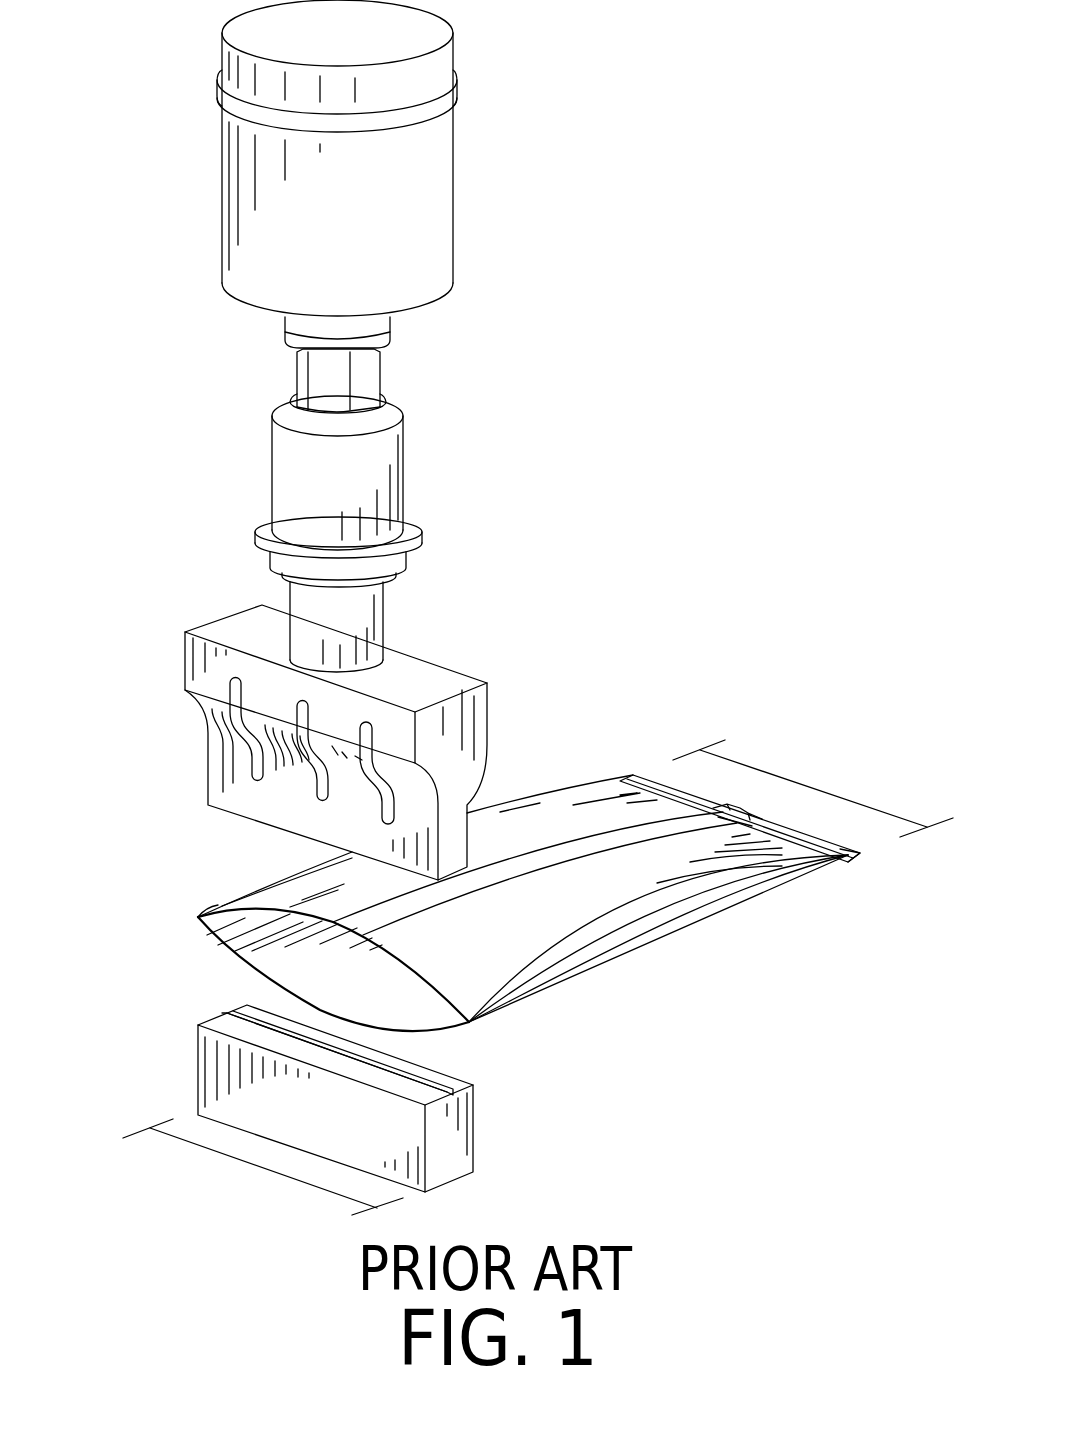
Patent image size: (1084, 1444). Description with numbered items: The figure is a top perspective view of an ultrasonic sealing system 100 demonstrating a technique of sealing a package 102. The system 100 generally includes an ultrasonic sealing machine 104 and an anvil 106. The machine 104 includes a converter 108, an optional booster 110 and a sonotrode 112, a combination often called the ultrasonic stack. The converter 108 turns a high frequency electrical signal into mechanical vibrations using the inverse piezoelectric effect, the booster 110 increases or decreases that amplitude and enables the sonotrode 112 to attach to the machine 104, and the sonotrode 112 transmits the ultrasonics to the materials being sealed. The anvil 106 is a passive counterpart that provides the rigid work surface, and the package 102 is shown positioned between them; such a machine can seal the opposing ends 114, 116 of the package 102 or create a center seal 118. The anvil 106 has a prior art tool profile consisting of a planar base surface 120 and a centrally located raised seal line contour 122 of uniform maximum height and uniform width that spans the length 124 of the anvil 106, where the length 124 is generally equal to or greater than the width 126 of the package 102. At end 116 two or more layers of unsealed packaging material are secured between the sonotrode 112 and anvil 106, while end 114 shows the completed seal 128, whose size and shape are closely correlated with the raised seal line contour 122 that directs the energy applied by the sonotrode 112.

The ultrasonic sealing system 100 is at (114, 58).
The package 102 is at (640, 940).
The ultrasonic sealing machine 104 is at (565, 305).
The anvil 106 is at (473, 1163).
The converter 108 is at (450, 180).
The booster 110 is at (402, 489).
The sonotrode 112 is at (447, 667).
The opposing end of package 114 is at (847, 838).
The opposing end of package 116 is at (200, 919).
The center seal 118 is at (507, 852).
The planar base surface 120 is at (460, 1080).
The raised seal line contour 122 is at (223, 1012).
The length of the anvil 124 is at (263, 1168).
The width of the package 126 is at (817, 788).
The seal 128 is at (640, 773).